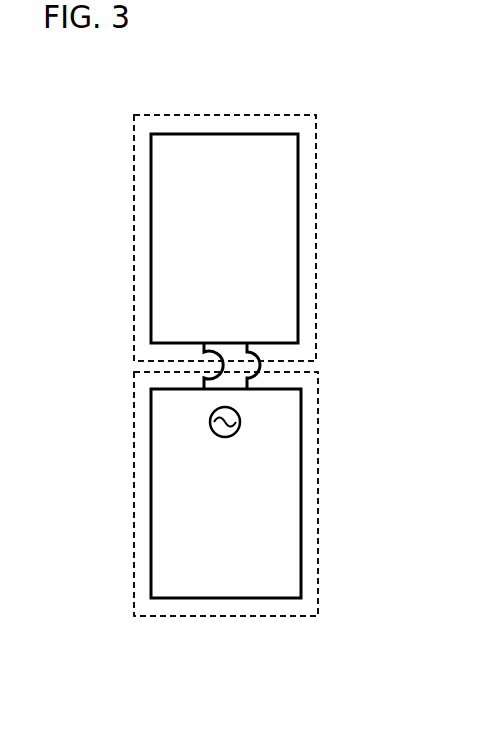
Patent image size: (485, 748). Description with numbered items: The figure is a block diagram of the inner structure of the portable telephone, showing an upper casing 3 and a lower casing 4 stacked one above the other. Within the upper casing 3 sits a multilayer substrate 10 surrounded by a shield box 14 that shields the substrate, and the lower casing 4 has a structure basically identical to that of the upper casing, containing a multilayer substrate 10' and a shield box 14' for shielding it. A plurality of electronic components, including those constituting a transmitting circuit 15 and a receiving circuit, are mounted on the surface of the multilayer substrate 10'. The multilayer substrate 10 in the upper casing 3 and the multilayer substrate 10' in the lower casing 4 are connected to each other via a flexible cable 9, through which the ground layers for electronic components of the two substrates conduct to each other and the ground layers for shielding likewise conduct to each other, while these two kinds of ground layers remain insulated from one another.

The upper casing 3 is at (125, 115).
The lower casing 4 is at (125, 372).
The flexible cable 9 is at (262, 366).
The multilayer substrate 10 is at (259, 238).
The multilayer substrate 10' is at (264, 493).
The shield box 14 is at (251, 238).
The shield box 14' is at (255, 494).
The transmitting circuit 15 is at (240, 421).